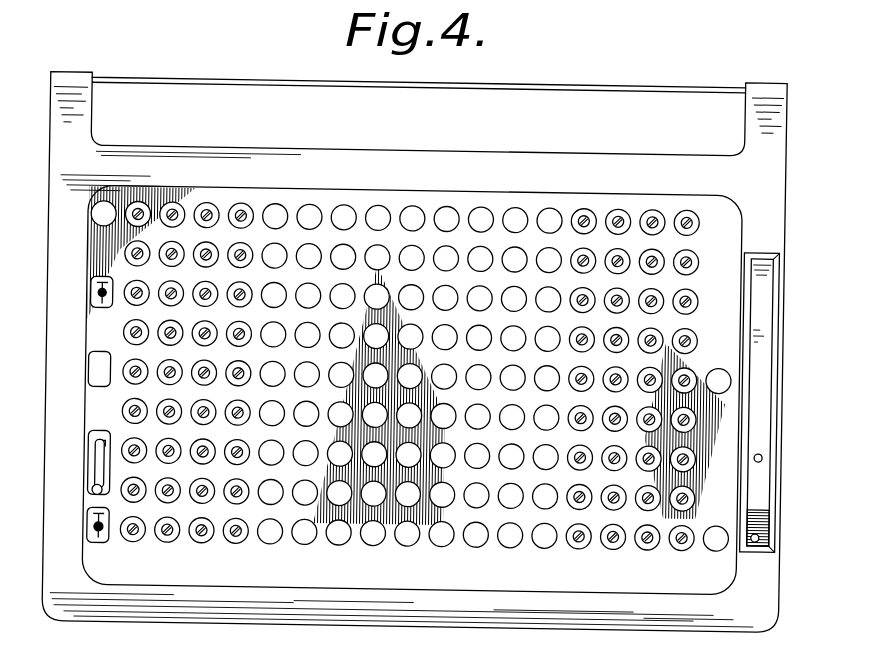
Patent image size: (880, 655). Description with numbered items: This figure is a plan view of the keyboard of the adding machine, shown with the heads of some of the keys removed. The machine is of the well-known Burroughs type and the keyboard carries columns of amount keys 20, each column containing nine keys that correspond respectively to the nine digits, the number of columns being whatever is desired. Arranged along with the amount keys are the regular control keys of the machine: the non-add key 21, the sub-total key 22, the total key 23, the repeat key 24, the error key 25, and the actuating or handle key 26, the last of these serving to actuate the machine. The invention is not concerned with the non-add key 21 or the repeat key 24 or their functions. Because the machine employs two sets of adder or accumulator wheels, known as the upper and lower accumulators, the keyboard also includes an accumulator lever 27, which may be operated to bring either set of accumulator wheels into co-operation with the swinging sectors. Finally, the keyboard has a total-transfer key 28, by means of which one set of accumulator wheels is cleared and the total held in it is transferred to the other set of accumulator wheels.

The amount keys 20 is at (545, 534).
The non-add key 21 is at (93, 220).
The sub-total key 22 is at (91, 371).
The total key 23 is at (96, 528).
The repeat key 24 is at (718, 539).
The error key 25 is at (720, 363).
The actuating or handle key 26 is at (769, 364).
The accumulator lever 27 is at (97, 490).
The total-transfer key 28 is at (94, 290).